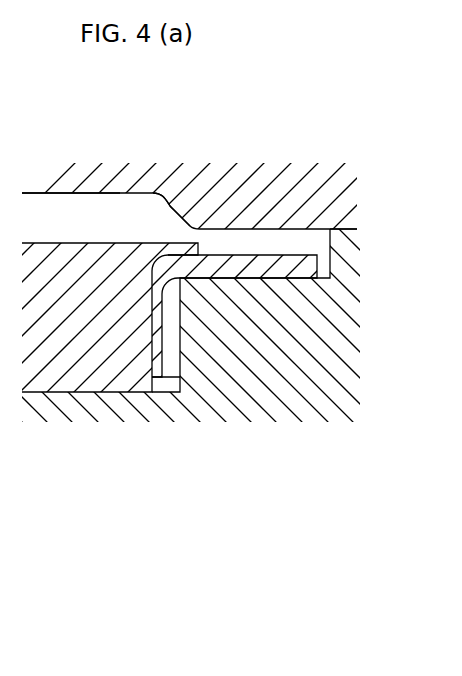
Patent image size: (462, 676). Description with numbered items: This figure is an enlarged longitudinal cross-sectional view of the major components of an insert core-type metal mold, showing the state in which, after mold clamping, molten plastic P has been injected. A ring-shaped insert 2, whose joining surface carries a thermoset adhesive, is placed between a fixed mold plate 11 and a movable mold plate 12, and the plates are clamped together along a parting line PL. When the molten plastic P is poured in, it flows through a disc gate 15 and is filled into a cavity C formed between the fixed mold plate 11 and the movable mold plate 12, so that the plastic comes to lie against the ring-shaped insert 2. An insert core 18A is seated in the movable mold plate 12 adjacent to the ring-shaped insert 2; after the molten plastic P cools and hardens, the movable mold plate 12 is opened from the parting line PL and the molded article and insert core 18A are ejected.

The fixed mold plate 11 is at (271, 196).
The movable mold plate 12 is at (318, 388).
The disc gate 15 is at (170, 196).
The insert core 18A is at (79, 365).
The ring-shaped insert 2 is at (232, 280).
The parting line PL is at (333, 231).
The cavity C is at (52, 202).
The molten plastic P is at (97, 212).